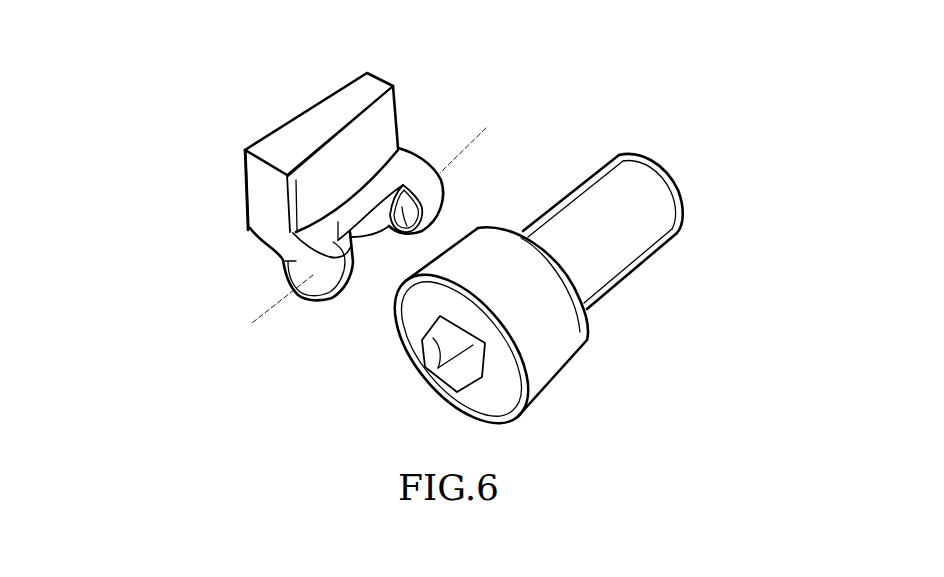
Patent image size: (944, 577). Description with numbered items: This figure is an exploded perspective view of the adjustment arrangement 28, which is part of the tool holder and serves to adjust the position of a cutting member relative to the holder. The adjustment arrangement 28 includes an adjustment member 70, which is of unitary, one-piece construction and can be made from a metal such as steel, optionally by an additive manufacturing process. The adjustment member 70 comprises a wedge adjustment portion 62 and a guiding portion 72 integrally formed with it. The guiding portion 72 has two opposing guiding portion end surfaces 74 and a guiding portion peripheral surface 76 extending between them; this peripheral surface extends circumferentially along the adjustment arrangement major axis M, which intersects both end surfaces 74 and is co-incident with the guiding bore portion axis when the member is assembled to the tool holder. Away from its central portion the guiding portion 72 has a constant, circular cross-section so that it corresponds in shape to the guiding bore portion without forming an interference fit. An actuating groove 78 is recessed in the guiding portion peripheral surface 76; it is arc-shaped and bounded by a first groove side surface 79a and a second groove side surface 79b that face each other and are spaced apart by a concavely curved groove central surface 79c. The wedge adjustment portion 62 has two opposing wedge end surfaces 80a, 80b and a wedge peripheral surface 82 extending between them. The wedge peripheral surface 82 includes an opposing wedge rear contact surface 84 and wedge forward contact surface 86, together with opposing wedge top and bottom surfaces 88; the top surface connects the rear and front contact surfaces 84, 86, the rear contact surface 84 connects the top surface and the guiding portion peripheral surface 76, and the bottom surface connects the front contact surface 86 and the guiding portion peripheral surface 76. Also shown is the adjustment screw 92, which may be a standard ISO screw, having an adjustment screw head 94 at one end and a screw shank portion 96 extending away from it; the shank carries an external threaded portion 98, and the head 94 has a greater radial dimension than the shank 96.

The adjustment arrangement 28 is at (645, 50).
The wedge adjustment portion 62 is at (198, 213).
The adjustment member 70 is at (158, 136).
The guiding portion 72 is at (288, 312).
The guiding portion end surfaces 74 is at (444, 183).
The guiding portion peripheral surface 76 is at (414, 166).
The actuating groove 78 is at (367, 265).
The first groove side surface 79a is at (413, 233).
The second groove side surface 79b is at (364, 245).
The groove central surface 79c is at (397, 240).
The wedge end surface 80a is at (252, 181).
The wedge end surface 80b is at (394, 110).
The wedge peripheral surface 82 is at (304, 88).
The wedge rear contact surface 84 is at (360, 147).
The wedge forward contact surface 86 is at (258, 138).
The wedge top and bottom surfaces 88 is at (290, 112).
The adjustment arrangement major axis M is at (485, 128).
The adjustment screw 92 is at (716, 196).
The adjustment screw head 94 is at (575, 390).
The screw shank portion 96 is at (680, 259).
The external threaded portion 98 is at (643, 297).